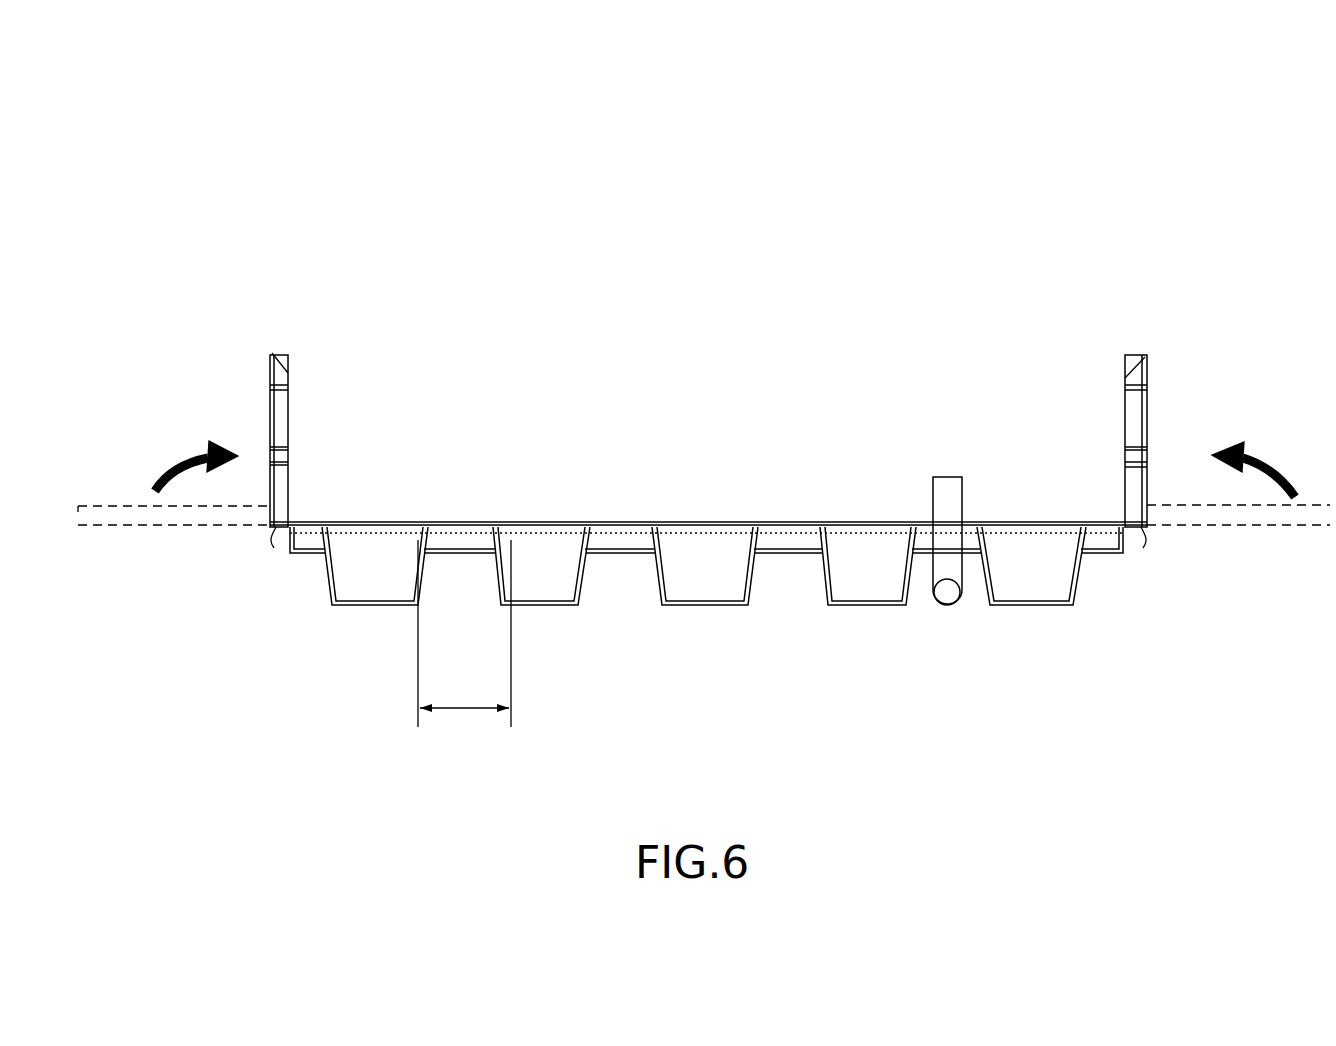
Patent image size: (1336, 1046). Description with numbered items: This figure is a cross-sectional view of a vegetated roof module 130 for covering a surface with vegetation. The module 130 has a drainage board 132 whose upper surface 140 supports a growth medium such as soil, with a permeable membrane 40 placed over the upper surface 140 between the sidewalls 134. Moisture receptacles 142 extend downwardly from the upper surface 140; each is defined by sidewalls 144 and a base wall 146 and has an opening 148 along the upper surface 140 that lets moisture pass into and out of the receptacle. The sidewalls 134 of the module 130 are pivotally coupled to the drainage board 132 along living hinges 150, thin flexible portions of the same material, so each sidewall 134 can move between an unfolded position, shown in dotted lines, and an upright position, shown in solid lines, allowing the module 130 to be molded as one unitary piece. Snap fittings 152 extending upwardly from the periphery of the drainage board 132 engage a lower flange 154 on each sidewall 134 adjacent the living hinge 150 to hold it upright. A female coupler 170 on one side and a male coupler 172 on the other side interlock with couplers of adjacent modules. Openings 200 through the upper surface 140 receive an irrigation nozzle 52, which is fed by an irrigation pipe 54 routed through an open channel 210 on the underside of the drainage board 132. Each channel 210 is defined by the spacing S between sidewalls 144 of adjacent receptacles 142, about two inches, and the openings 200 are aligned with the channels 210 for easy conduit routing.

The vegetated roof module 130 is at (340, 165).
The permeable membrane 40 is at (883, 523).
The moisture receptacle 142 is at (348, 569).
The sidewall of moisture receptacle 144 is at (333, 557).
The opening 148 is at (387, 523).
The opening 200 is at (468, 543).
The upper surface 140 is at (592, 527).
The drainage board 132 is at (758, 523).
The lower flange 154 is at (279, 520).
The snap fitting 152 is at (282, 518).
The living hinge 150 is at (276, 540).
The sidewall 134 is at (268, 387).
The female coupler 170 is at (270, 508).
The male coupler 172 is at (1153, 481).
The irrigation nozzle 52 is at (961, 520).
The irrigation pipe 54 is at (962, 607).
The base wall 146 is at (358, 607).
The open channel 210 is at (450, 607).
The spacing S is at (463, 712).